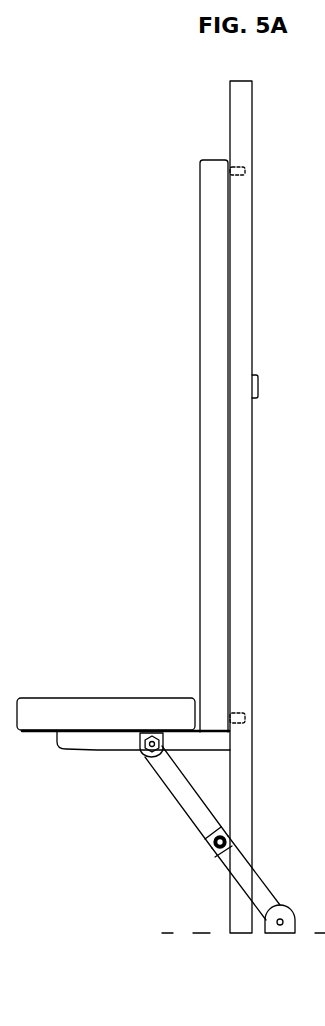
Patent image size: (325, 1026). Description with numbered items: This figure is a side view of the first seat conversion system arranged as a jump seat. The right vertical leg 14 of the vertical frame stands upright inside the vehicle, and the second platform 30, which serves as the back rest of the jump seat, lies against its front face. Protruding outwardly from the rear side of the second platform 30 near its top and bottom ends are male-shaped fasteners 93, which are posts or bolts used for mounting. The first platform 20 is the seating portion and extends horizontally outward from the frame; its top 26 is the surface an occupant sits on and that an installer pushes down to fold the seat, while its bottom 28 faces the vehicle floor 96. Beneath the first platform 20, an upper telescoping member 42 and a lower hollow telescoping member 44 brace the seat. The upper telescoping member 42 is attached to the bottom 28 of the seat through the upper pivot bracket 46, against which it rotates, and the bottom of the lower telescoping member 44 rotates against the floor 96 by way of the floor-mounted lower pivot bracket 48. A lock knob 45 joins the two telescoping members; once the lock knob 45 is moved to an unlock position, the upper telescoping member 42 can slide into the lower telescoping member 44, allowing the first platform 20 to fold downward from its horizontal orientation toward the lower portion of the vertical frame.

The right vertical leg 14 is at (245, 450).
The first platform 20 is at (123, 716).
The top 26 is at (67, 698).
The bottom 28 is at (88, 738).
The second platform 30 is at (197, 425).
The upper telescoping member 42 is at (187, 803).
The lower telescoping member 44 is at (230, 866).
The lock knob 45 is at (214, 846).
The upper pivot bracket 46 is at (146, 757).
The lower pivot bracket 48 is at (282, 926).
The fastener for bench edge 93 is at (233, 168).
The floor of vehicle 96 is at (195, 934).